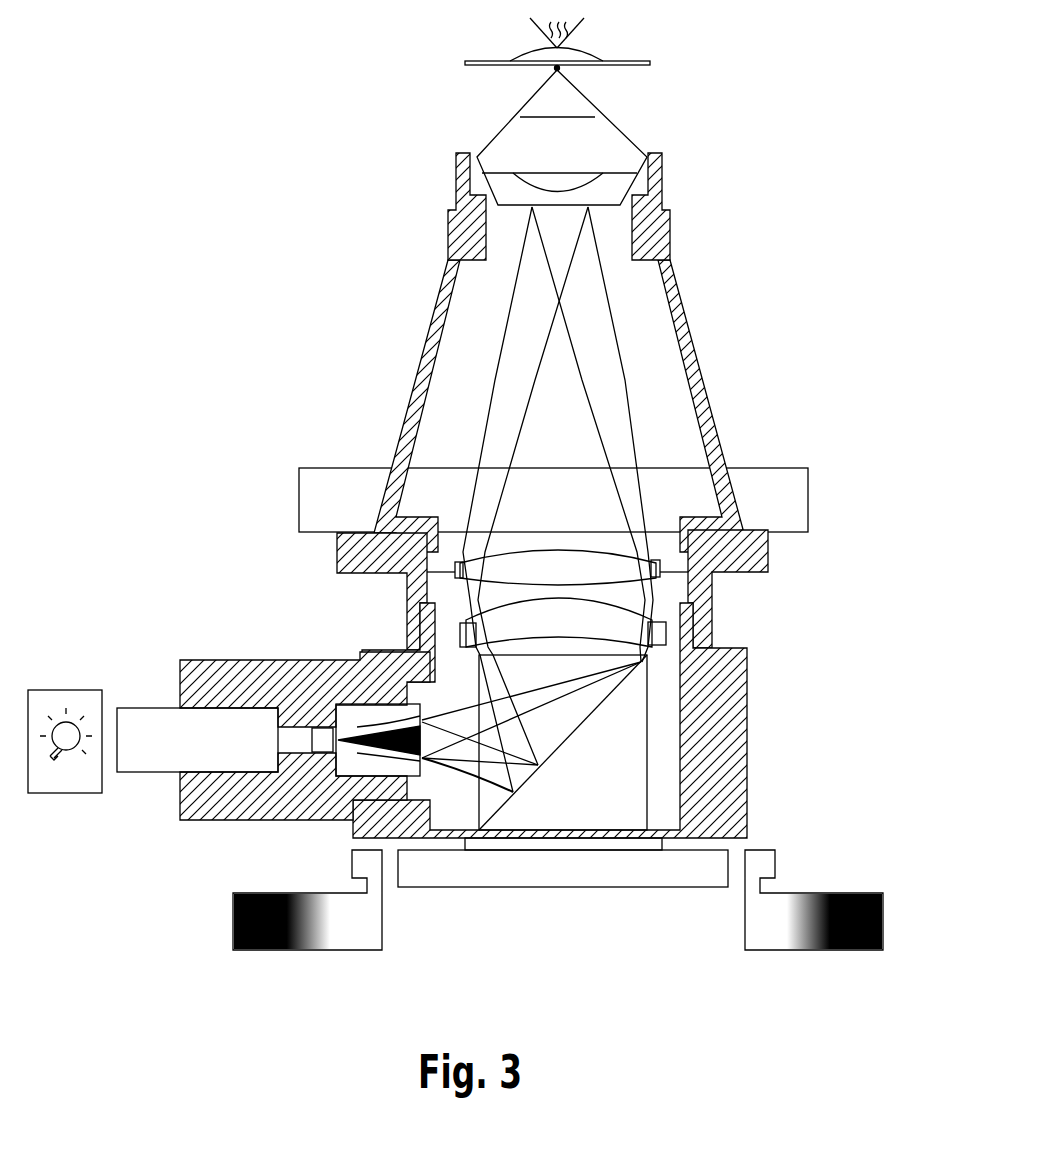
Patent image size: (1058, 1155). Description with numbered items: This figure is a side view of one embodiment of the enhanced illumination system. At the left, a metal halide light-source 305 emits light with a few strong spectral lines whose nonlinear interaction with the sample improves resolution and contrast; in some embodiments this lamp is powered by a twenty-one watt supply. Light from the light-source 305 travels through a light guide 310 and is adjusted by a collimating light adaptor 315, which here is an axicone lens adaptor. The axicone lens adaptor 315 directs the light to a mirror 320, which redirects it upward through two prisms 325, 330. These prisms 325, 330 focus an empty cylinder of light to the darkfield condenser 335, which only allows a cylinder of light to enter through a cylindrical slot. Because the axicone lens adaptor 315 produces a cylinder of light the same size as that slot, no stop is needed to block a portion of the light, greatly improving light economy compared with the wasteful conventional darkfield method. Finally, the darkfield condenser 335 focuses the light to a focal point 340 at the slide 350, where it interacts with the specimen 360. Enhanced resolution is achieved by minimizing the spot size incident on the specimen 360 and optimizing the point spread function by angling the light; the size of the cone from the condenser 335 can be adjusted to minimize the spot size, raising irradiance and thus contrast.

The metal halide light-source 305 is at (73, 710).
The light guide 310 is at (157, 772).
The collimating light adaptor 315 is at (337, 776).
The mirror 320 is at (563, 743).
The prism 325 is at (666, 635).
The prism 330 is at (660, 575).
The darkfield condenser 335 is at (607, 123).
The focal point 340 is at (553, 70).
The slide 350 is at (650, 63).
The specimen 360 is at (588, 50).